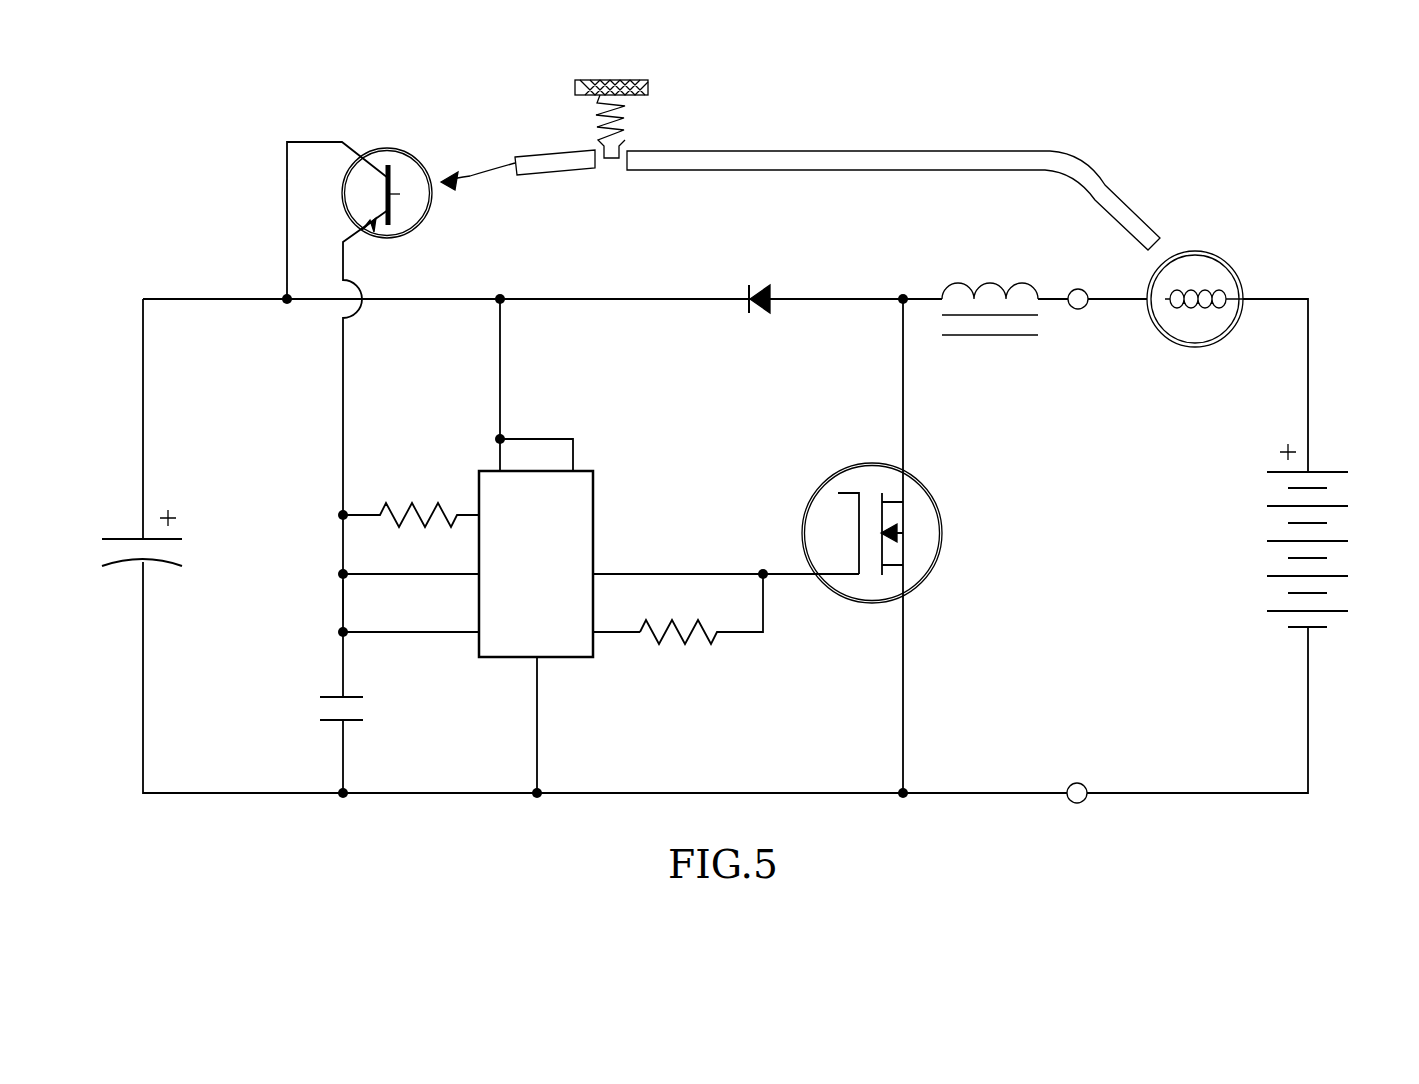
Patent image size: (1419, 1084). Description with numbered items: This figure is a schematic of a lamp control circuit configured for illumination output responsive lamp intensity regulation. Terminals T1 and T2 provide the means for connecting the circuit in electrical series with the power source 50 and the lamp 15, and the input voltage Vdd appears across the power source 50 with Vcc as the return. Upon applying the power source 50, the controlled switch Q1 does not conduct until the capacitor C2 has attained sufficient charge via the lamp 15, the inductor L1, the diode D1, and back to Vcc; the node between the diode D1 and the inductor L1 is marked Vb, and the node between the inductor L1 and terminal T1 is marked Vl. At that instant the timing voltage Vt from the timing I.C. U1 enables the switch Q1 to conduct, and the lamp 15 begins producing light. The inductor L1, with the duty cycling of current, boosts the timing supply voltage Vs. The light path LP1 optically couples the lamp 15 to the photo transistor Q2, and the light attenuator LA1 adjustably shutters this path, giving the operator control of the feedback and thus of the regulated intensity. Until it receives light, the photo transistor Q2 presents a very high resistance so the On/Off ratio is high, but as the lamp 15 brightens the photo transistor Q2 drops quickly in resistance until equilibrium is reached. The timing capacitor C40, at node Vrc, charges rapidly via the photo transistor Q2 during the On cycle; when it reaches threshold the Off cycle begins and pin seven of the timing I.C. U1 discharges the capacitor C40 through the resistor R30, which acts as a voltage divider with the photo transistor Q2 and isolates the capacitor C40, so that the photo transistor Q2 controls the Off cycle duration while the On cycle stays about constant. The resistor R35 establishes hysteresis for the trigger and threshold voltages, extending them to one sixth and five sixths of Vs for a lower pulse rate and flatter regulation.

The photo transistor Q2 is at (415, 172).
The light attenuator LA1 is at (620, 128).
The light path LP1 is at (850, 157).
The diode D1 is at (762, 315).
The inductor L1 is at (990, 283).
The terminal T1 is at (1070, 307).
The lamp 15 is at (1197, 270).
The power source 50 is at (1270, 595).
The controlled switch Q1 is at (923, 545).
The timing I.C. U1 is at (573, 508).
The resistor R30 is at (430, 502).
The resistor R35 is at (705, 642).
The capacitor C2 is at (105, 548).
The capacitor C40 is at (360, 708).
The terminal T2 is at (1072, 788).
The timing supply voltage Vs is at (165, 299).
The boost voltage node Vb is at (895, 299).
The lamp voltage node Vl is at (1116, 299).
The input voltage Vdd is at (1278, 298).
The timing voltage Vt is at (740, 572).
The RC timing voltage node Vrc is at (342, 597).
The common return voltage Vcc is at (1135, 792).